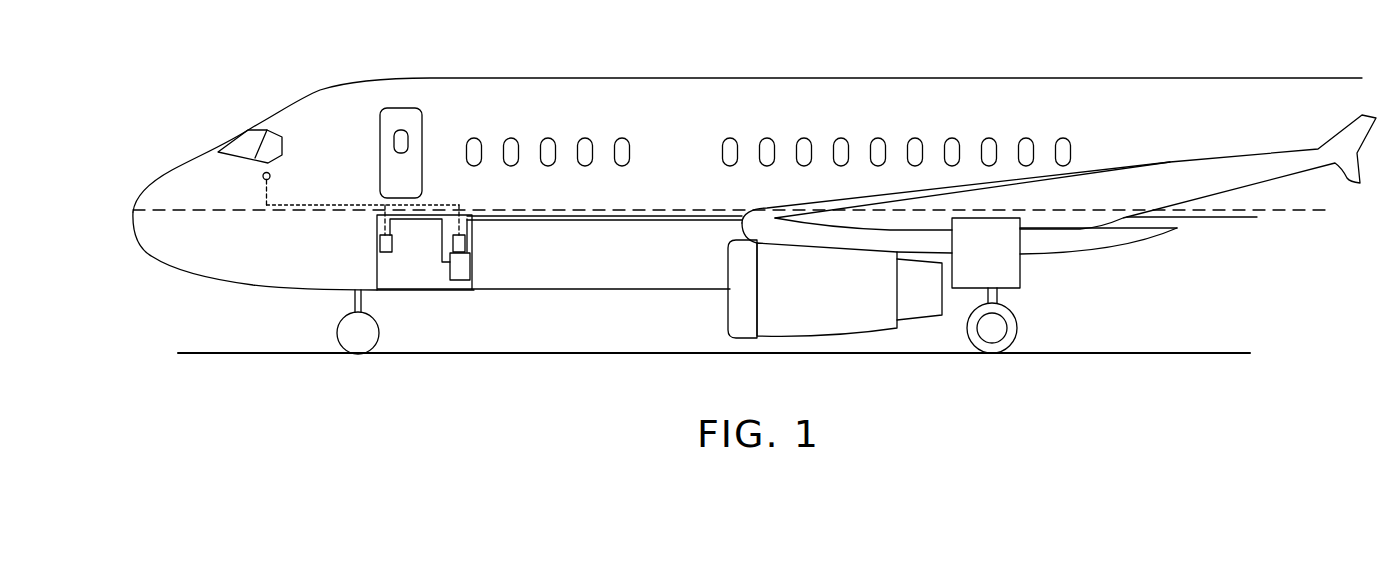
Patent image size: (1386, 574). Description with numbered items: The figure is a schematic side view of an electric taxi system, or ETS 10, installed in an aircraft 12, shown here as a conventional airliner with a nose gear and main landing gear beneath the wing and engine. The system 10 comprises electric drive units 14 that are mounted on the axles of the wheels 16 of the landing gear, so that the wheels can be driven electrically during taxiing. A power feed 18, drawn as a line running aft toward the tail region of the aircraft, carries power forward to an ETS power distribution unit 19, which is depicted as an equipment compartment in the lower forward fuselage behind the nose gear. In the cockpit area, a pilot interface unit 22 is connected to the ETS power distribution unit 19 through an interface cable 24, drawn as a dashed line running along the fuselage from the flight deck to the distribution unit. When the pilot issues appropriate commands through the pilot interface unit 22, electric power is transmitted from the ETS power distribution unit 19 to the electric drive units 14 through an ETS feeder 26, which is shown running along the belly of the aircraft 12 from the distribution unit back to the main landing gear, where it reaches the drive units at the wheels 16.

The electric taxi system 10 is at (754, 231).
The aircraft 12 is at (320, 90).
The electric drive unit 14 is at (998, 345).
The wheel 16 is at (1020, 327).
The power feed 18 is at (1223, 218).
The ETS power distribution unit 19 is at (420, 278).
The pilot interface unit 22 is at (263, 177).
The interface cable 24 is at (316, 205).
The ETS feeder 26 is at (610, 222).